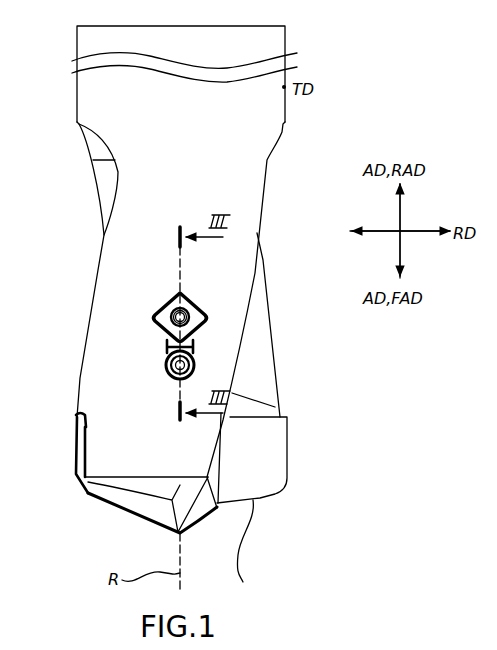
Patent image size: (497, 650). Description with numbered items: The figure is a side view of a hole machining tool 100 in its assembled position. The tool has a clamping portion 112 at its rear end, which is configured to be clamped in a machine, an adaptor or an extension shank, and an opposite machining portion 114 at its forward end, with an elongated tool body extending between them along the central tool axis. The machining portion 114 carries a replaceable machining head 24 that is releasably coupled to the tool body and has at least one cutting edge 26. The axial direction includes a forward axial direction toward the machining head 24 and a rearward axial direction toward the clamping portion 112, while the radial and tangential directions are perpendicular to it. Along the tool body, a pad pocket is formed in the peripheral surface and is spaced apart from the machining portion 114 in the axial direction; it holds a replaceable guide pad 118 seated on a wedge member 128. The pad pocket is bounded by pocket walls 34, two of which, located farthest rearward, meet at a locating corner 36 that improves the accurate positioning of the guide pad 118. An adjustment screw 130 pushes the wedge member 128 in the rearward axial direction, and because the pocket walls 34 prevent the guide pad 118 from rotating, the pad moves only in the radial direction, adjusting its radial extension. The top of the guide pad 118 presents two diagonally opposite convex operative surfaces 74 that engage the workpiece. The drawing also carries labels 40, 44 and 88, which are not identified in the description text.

The hole machining tool 100 is at (409, 133).
The clamping portion 112 is at (270, 43).
The machining portion 114 is at (305, 451).
The machining head 24 is at (106, 502).
The cutting edge 26 is at (246, 552).
The pocket walls 34 is at (154, 309).
The locating corner 36 is at (181, 291).
The convex operative surfaces 74 is at (184, 298).
The wedge member 128 is at (166, 353).
The cutting insert 40 is at (396, 646).
The insert surface 44 is at (320, 649).
The insert edge 88 is at (452, 649).
The guide pad 118 is at (447, 649).
The adjustment screw 130 is at (362, 649).